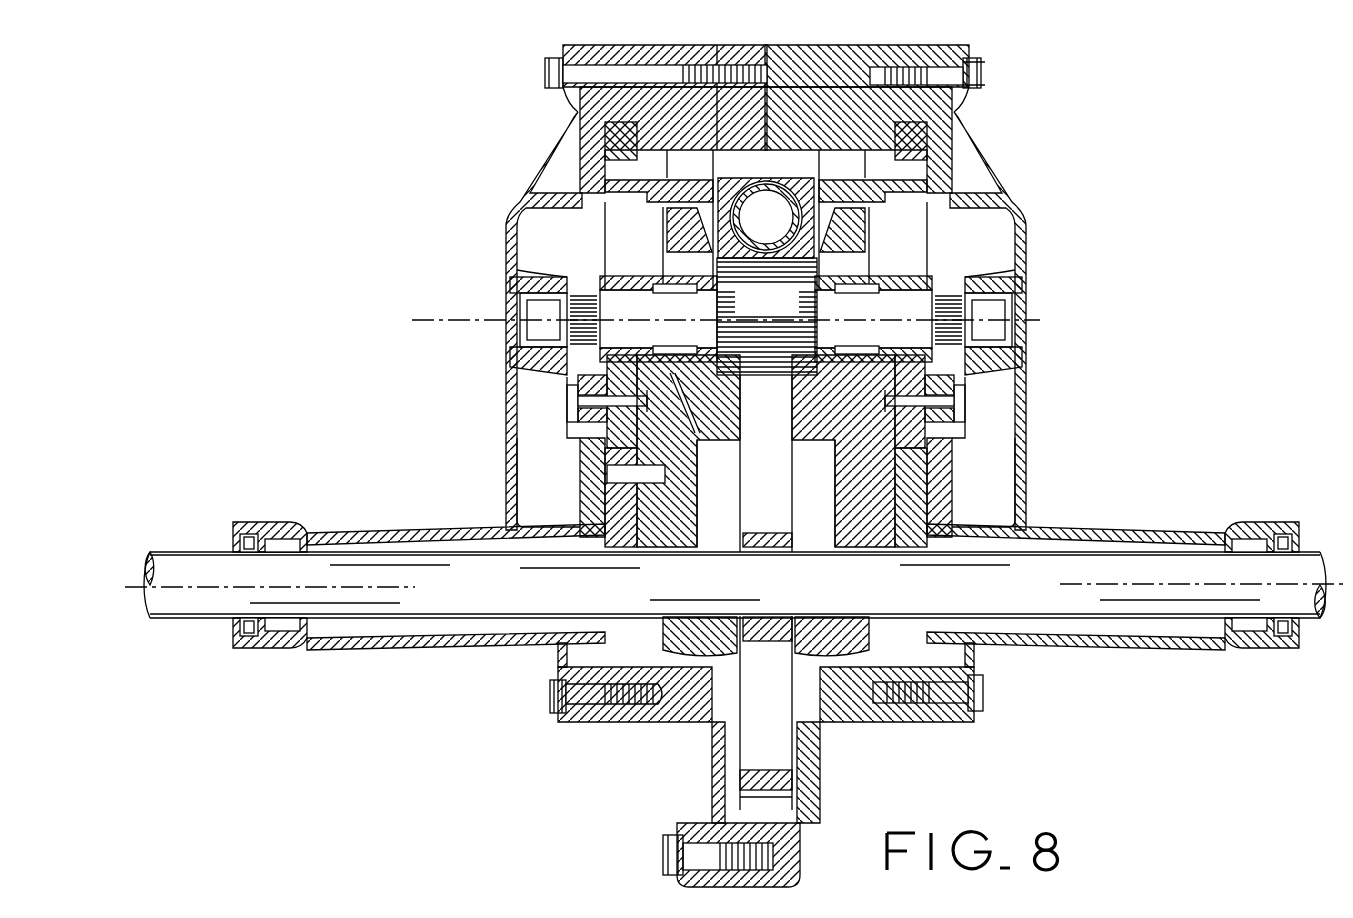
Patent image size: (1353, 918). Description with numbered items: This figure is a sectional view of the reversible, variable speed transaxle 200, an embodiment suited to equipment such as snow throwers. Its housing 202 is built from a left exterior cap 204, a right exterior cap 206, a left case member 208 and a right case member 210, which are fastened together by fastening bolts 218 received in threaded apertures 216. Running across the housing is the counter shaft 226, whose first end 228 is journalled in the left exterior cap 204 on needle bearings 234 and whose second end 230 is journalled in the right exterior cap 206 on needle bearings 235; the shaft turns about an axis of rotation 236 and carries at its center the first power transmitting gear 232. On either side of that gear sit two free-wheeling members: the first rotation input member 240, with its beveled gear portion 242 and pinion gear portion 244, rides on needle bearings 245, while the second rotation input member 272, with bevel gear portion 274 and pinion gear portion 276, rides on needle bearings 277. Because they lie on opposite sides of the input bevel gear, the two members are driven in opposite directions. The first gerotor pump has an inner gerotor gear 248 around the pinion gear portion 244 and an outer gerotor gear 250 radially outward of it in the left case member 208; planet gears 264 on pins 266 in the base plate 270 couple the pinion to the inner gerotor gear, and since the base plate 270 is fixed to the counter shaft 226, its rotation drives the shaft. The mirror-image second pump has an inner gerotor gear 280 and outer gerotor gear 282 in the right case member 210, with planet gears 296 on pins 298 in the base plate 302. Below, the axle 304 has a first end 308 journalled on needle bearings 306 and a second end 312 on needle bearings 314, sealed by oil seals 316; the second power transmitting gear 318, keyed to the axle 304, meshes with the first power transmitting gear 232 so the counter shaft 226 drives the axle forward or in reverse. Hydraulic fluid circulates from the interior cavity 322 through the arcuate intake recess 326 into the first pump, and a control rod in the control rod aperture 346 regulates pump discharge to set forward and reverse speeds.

The transaxle 200 is at (1096, 219).
The housing 202 is at (887, 48).
The left exterior cap 204 is at (556, 148).
The right exterior cap 206 is at (985, 150).
The left case member 208 is at (668, 58).
The right case member 210 is at (830, 44).
The threaded apertures 216 is at (968, 62).
The fastening bolts 218 is at (984, 75).
The counter shaft 226 is at (640, 320).
The first end 228 is at (535, 308).
The second end 230 is at (1000, 306).
The first power transmitting gear 232 is at (741, 316).
The needle bearings 234 is at (516, 368).
The needle bearings 235 is at (1012, 358).
The axis of rotation 236 is at (418, 320).
The first rotation input member 240 is at (672, 278).
The beveled gear portion 242 is at (724, 446).
The pinion gear portion 244 is at (617, 258).
The needle bearings 245 is at (678, 348).
The inner gerotor gear 248 is at (590, 186).
The outer gerotor gear 250 is at (605, 135).
The planet gears 264 is at (522, 332).
The pin 266 is at (580, 402).
The base plate 270 is at (526, 396).
The second rotation input member 272 is at (827, 278).
The bevel gear portion 274 is at (820, 404).
The pinion gear portion 276 is at (912, 274).
The needle bearings 277 is at (854, 350).
The inner gerotor gear 280 is at (925, 188).
The outer gerotor gear 282 is at (925, 140).
The planet gears 296 is at (1020, 422).
The pin 298 is at (972, 402).
The base plate 302 is at (1015, 390).
The axle 304 is at (1098, 566).
The needle bearings 306 is at (284, 539).
The first end 308 is at (186, 552).
The second end 312 is at (1316, 552).
The needle bearings 314 is at (1259, 538).
The oil seals 316 is at (246, 630).
The second power transmitting gear 318 is at (780, 481).
The interior cavity 322 is at (696, 484).
The arcuate intake recess 326 is at (636, 480).
The control rod aperture 346 is at (766, 184).